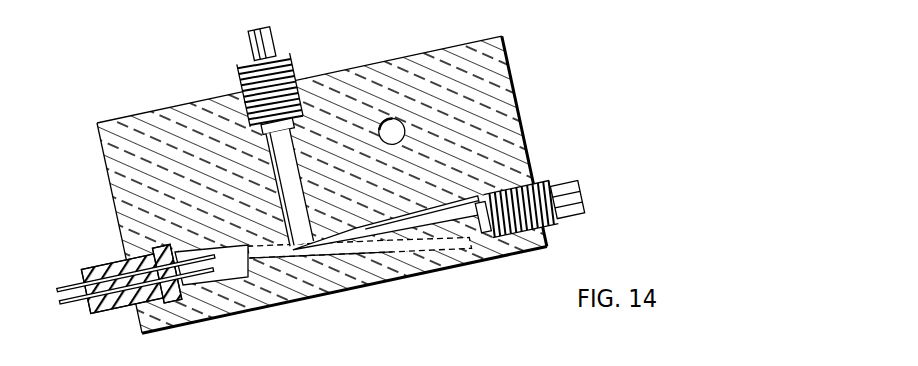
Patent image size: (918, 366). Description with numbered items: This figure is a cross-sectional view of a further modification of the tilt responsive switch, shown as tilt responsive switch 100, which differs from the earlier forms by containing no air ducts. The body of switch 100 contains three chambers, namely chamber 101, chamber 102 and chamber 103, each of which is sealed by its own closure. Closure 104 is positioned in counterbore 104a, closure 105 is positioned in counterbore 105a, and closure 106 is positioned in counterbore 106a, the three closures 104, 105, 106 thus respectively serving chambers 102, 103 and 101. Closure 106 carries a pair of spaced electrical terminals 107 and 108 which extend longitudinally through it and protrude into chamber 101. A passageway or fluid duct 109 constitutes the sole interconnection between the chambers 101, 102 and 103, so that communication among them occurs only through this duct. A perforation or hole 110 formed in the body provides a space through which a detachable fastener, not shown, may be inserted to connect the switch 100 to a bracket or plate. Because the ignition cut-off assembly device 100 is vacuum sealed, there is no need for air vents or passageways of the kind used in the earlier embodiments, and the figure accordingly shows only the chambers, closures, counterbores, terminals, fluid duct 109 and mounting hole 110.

The tilt responsive switch 100 is at (528, 105).
The chamber 101 is at (239, 266).
The chamber 102 is at (290, 157).
The chamber 103 is at (471, 222).
The closure 104 is at (247, 62).
The counterbore 104a is at (244, 96).
The closure 105 is at (548, 178).
The counterbore 105a is at (549, 251).
The closure 106 is at (118, 306).
The counterbore 106a is at (160, 307).
The electrical terminal 107 is at (63, 305).
The electrical terminal 108 is at (63, 284).
The passageway or fluid duct 109 is at (331, 260).
The perforation or hole 110 is at (394, 118).